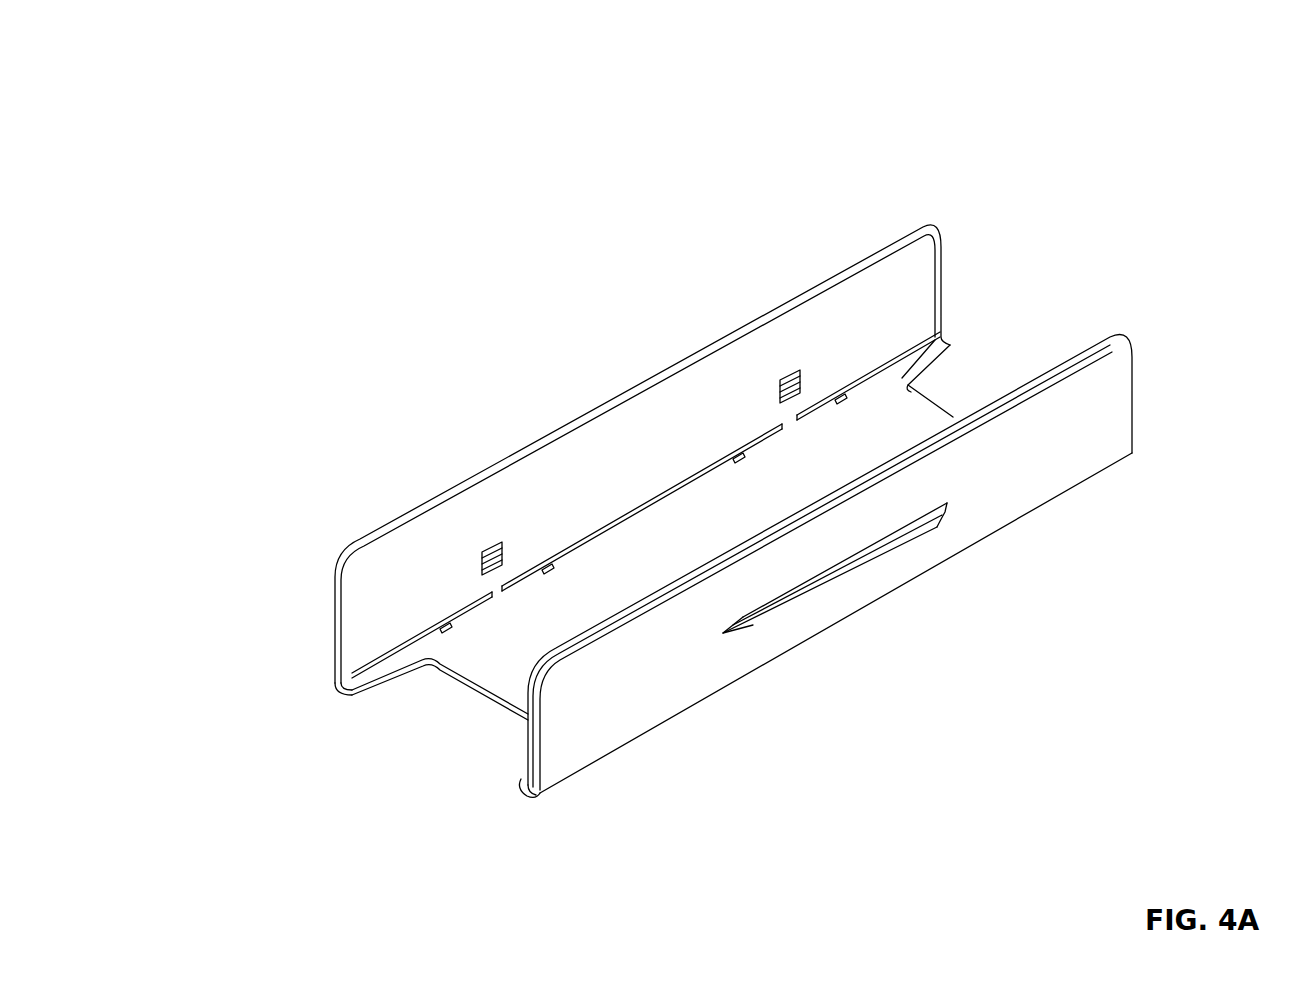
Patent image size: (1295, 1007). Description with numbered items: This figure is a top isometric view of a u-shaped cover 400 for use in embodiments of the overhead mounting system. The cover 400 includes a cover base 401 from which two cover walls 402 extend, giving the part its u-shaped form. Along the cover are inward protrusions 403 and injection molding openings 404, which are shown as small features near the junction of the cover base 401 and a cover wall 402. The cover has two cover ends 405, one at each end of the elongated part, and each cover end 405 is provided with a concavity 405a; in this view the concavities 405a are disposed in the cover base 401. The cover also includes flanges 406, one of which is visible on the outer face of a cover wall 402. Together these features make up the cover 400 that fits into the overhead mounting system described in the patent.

The cover 400 is at (247, 123).
The cover base 401 is at (728, 537).
The cover walls 402 is at (610, 484).
The inward protrusions 403 is at (790, 368).
The injection molding openings 404 is at (492, 596).
The cover ends 405 is at (1066, 281).
The concavities 405a is at (955, 418).
The flanges 406 is at (837, 587).